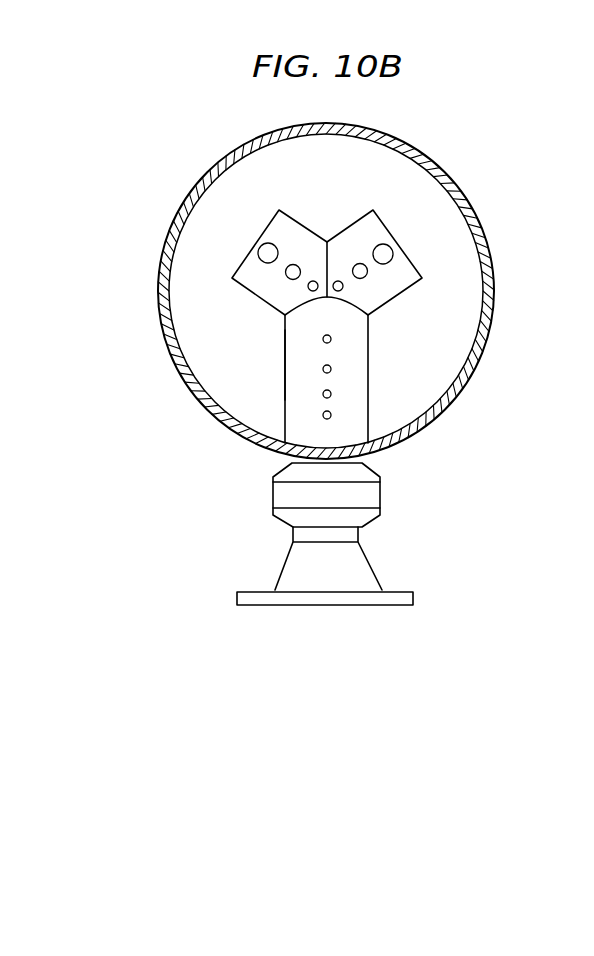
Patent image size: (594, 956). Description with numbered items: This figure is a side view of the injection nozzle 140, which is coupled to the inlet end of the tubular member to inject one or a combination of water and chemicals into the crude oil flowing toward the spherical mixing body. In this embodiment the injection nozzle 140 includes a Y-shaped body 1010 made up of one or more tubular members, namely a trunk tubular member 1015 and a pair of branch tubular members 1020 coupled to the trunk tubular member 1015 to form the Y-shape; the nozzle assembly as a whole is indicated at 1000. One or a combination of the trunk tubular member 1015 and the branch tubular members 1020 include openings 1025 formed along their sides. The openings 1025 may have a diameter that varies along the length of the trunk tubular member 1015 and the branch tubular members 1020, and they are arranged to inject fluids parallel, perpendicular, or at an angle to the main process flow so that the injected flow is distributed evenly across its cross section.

The spherical hydrophone assembly 1000 is at (425, 455).
The Y-shaped body 1010 is at (368, 353).
The trunk tubular member 1015 is at (285, 357).
The branch tubular members 1020 is at (232, 281).
The openings 1025 is at (394, 252).
The injection nozzle 140 is at (335, 645).